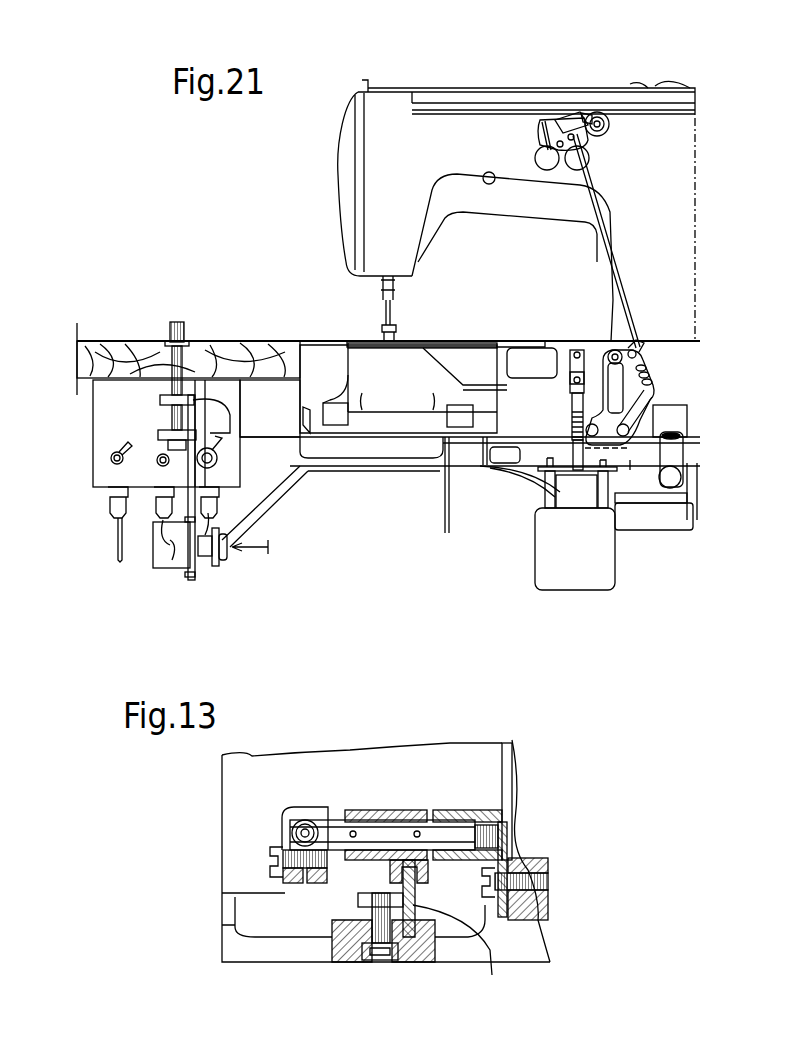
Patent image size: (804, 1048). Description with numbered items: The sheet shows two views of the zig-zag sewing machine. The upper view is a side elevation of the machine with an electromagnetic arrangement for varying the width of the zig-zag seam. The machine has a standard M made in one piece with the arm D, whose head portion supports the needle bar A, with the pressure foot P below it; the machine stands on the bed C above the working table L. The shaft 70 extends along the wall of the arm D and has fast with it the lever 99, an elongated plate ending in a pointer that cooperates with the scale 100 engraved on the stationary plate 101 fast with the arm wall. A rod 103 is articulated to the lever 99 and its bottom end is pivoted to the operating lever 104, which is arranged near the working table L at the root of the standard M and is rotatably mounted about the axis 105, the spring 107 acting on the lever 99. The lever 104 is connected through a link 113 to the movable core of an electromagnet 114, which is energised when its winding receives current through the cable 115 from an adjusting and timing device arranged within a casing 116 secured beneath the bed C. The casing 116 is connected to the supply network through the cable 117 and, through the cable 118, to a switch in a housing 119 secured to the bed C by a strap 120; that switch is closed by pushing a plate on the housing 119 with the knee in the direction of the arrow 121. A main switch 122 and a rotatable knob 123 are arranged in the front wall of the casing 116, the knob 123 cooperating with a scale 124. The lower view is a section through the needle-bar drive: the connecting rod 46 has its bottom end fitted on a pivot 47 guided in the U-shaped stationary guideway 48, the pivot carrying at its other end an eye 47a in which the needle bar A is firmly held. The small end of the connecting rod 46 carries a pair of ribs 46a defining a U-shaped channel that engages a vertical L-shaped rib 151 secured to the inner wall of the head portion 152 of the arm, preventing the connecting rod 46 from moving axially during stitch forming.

In FIG. 21, the shaft 70 is at (610, 126).
In FIG. 21, the lever 99 is at (583, 118).
In FIG. 21, the scale 100 is at (541, 132).
In FIG. 21, the stationary plate 101 is at (563, 126).
In FIG. 21, the rod 103 is at (614, 266).
In FIG. 21, the operating lever 104 is at (600, 337).
In FIG. 21, the axis 105 is at (636, 337).
In FIG. 21, the spring 107 is at (648, 380).
In FIG. 21, the link 113 is at (572, 371).
In FIG. 21, the electromagnet 114 is at (610, 552).
In FIG. 21, the cable 115 is at (369, 468).
In FIG. 21, the casing 116 is at (222, 474).
In FIG. 21, the cable 117 is at (118, 538).
In FIG. 21, the cable 118 is at (188, 547).
In FIG. 21, the housing 119 is at (156, 565).
In FIG. 21, the strap 120 is at (200, 418).
In FIG. 21, the arrow 121 is at (268, 545).
In FIG. 21, the main switch 122 is at (122, 448).
In FIG. 21, the rotatable knob 123 is at (275, 497).
In FIG. 21, the scale 124 is at (215, 441).
In FIG. 21, the needle bar A is at (384, 290).
In FIG. 13, the needle bar A is at (292, 836).
In FIG. 21, the pressure foot P is at (398, 328).
In FIG. 21, the working table L is at (455, 341).
In FIG. 21, the standard M is at (612, 312).
In FIG. 21, the bed C is at (240, 341).
In FIG. 21, the arm D is at (520, 198).
In FIG. 13, the connecting rod 46 is at (393, 810).
In FIG. 13, the ribs 46a is at (393, 872).
In FIG. 13, the pivot 47 is at (366, 820).
In FIG. 13, the eye 47a is at (288, 818).
In FIG. 13, the stationary guideway 48 is at (445, 810).
In FIG. 13, the L-shaped rib 151 is at (465, 950).
In FIG. 13, the head portion 152 is at (418, 962).